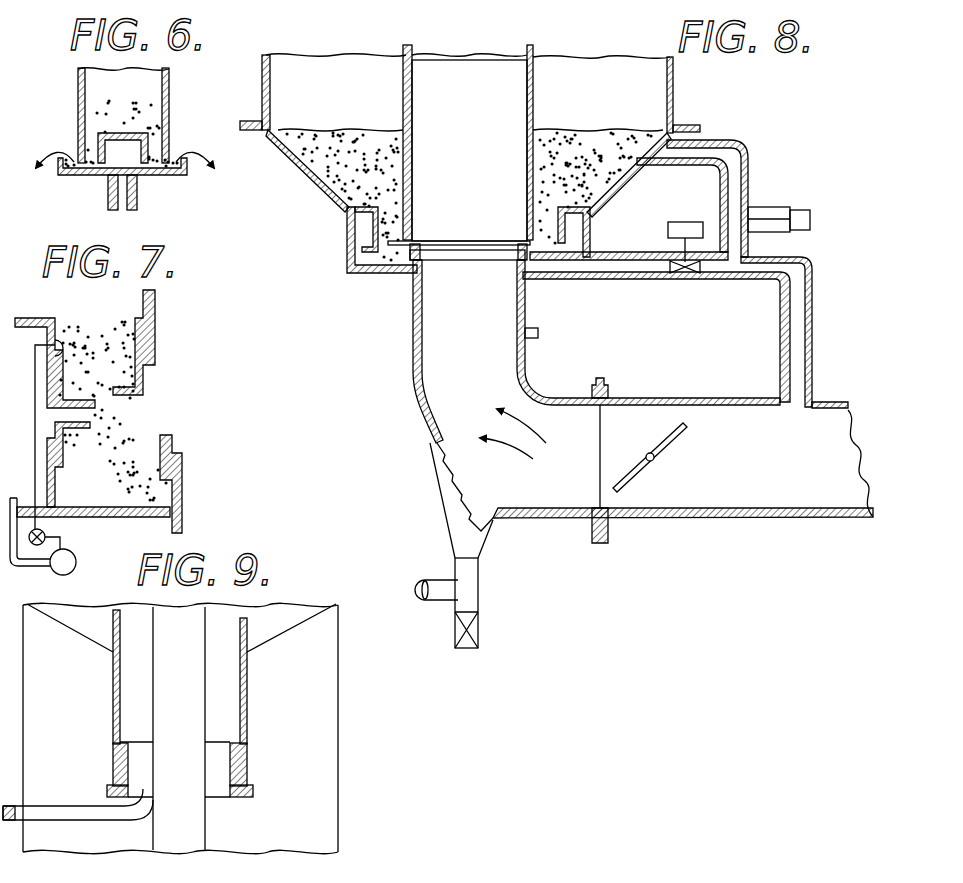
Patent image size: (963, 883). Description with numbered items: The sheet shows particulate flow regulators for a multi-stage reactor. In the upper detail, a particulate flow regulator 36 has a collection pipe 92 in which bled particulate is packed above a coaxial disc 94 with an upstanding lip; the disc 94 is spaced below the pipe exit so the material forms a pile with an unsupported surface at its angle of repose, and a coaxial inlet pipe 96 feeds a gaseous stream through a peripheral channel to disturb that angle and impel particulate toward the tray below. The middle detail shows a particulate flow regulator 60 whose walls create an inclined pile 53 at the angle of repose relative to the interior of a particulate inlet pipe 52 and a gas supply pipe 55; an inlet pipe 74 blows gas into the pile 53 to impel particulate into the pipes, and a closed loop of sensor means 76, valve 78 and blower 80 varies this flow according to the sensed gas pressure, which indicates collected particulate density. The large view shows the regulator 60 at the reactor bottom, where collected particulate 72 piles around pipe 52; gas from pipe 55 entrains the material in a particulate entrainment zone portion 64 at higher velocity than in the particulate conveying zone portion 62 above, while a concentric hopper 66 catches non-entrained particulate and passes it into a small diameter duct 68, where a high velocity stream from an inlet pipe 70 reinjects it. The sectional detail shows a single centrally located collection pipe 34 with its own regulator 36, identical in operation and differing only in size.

In FIG. 9, the collection pipe 34 is at (248, 726).
In FIG. 6, the particulate flow regulator 36 is at (171, 111).
In FIG. 9, the particulate flow regulator 36 is at (223, 802).
In FIG. 7, the particulate inlet pipe 52 is at (156, 310).
In FIG. 8, the particulate inlet pipe 52 is at (534, 83).
In FIG. 7, the inclined pile 53 is at (137, 425).
In FIG. 7, the pipe 55 is at (183, 468).
In FIG. 8, the pipe 55 is at (526, 356).
In FIG. 8, the particulate flow regulator 60 is at (676, 101).
In FIG. 8, the particulate conveying zone portion 62 is at (476, 213).
In FIG. 8, the particulate entrainment zone portion 64 is at (596, 359).
In FIG. 8, the concentric hopper 66 is at (494, 530).
In FIG. 8, the small diameter duct 68 is at (478, 589).
In FIG. 8, the inlet pipe 70 is at (416, 590).
In FIG. 8, the collected particulate 72 is at (344, 174).
In FIG. 7, the inlet pipe 74 is at (72, 440).
In FIG. 7, the sensor means 76 is at (60, 352).
In FIG. 7, the valve 78 is at (46, 537).
In FIG. 7, the blower 80 is at (76, 560).
In FIG. 6, the collection pipe 92 is at (167, 136).
In FIG. 6, the disc 94 is at (160, 176).
In FIG. 6, the inlet pipe 96 is at (108, 190).